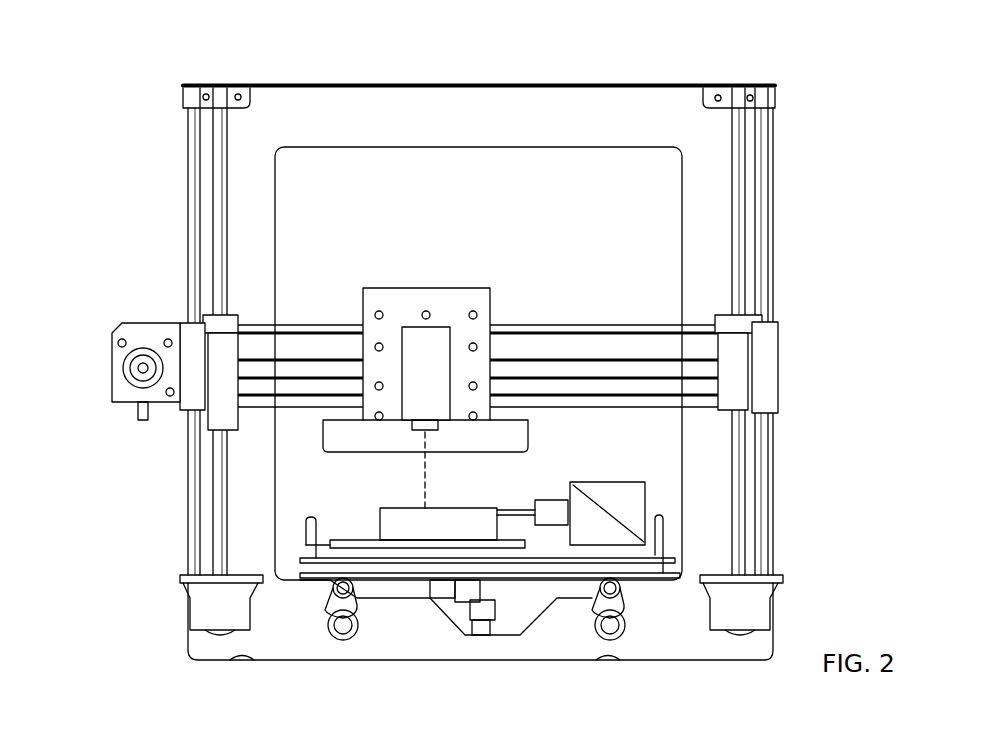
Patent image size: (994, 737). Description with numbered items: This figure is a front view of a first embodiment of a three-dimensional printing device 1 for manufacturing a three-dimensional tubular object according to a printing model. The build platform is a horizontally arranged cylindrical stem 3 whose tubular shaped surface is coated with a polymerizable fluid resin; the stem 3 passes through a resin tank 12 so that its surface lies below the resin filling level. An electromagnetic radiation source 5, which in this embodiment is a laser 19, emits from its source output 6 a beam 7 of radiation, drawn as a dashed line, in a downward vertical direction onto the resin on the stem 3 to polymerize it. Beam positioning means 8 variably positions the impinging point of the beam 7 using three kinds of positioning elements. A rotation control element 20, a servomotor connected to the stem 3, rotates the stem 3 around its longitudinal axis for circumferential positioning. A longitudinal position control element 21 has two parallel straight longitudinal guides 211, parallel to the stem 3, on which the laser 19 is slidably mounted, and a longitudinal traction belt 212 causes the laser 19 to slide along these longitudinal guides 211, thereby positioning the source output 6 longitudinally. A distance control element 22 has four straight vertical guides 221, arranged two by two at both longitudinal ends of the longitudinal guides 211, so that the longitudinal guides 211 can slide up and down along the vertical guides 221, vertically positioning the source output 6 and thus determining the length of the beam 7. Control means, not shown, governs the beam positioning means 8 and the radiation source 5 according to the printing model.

The 3D printing device 1 is at (822, 106).
The stem 3 is at (515, 517).
The electromagnetic radiation source 5 is at (439, 320).
The source output 6 is at (432, 430).
The beam 7 is at (425, 478).
The beam positioning means 8 is at (786, 362).
The resin tank 12 is at (408, 525).
The laser 19 is at (418, 357).
The rotation control element 20 is at (645, 497).
The longitudinal position control element 21 is at (670, 318).
The distance control element 22 is at (184, 161).
The longitudinal guides 211 is at (540, 405).
The longitudinal traction belt 212 is at (320, 358).
The vertical guides 221 is at (197, 204).